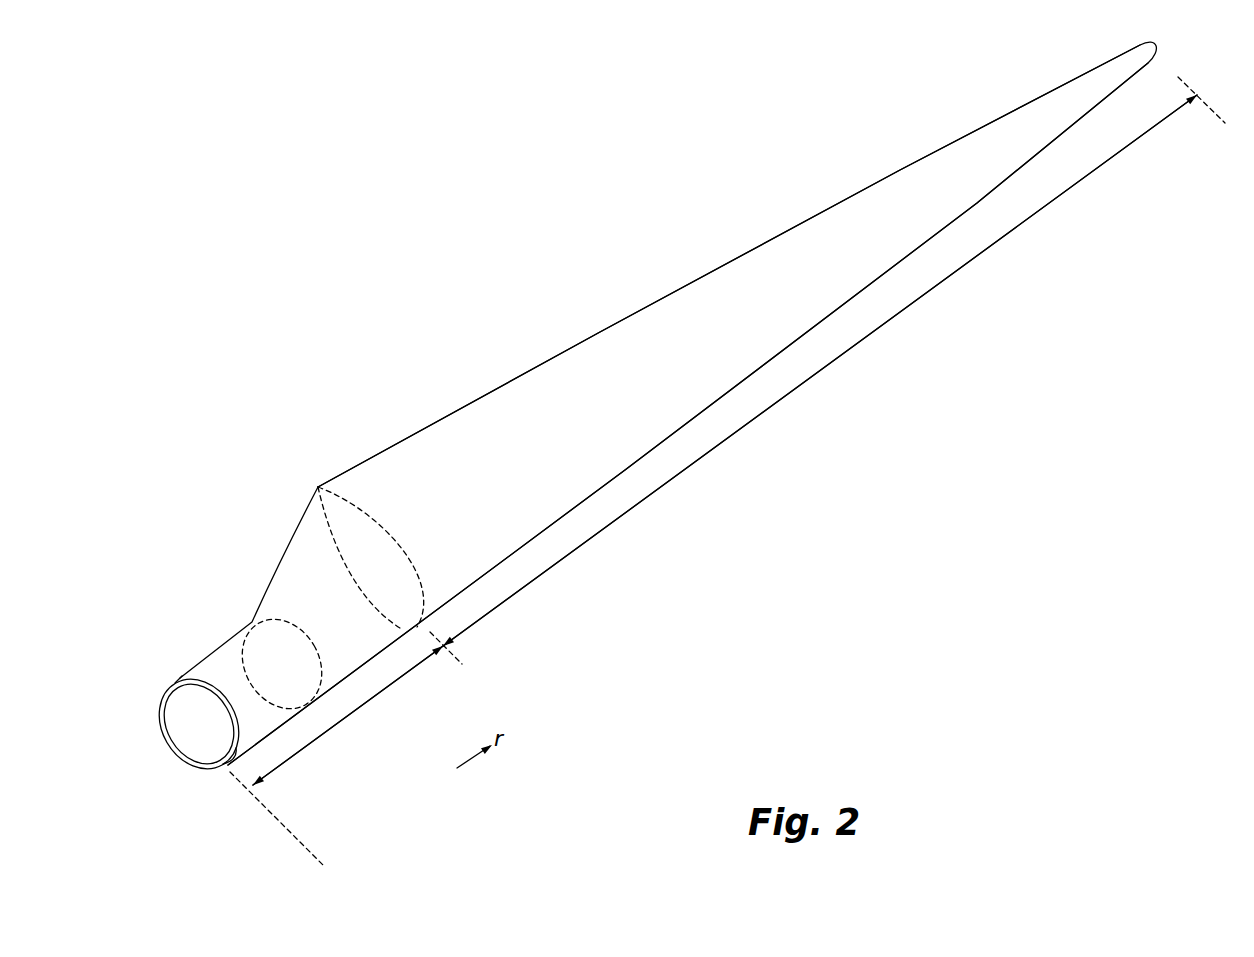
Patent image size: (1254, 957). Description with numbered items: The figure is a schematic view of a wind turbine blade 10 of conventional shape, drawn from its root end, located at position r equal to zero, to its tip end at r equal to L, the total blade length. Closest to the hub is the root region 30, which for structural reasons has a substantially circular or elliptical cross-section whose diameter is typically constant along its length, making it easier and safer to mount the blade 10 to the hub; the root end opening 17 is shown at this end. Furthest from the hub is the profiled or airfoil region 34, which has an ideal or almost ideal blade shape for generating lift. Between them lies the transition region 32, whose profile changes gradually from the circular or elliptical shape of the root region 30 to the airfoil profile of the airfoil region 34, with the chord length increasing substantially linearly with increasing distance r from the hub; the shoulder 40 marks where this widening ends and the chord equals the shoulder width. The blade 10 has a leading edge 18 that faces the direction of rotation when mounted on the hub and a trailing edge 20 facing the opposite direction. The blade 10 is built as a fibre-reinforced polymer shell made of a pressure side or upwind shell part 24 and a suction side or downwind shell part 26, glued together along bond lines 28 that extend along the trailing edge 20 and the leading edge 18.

The wind turbine blade 10 is at (482, 272).
The root end opening 17 is at (185, 708).
The leading edge 18 is at (853, 297).
The trailing edge 20 is at (722, 265).
The pressure side or upwind shell part 24 is at (187, 673).
The suction side or downwind shell part 26 is at (223, 763).
The bond lines 28 is at (178, 677).
The root region 30 is at (298, 753).
The transition region 32 is at (393, 683).
The airfoil region 34 is at (743, 427).
The shoulder 40 is at (318, 487).